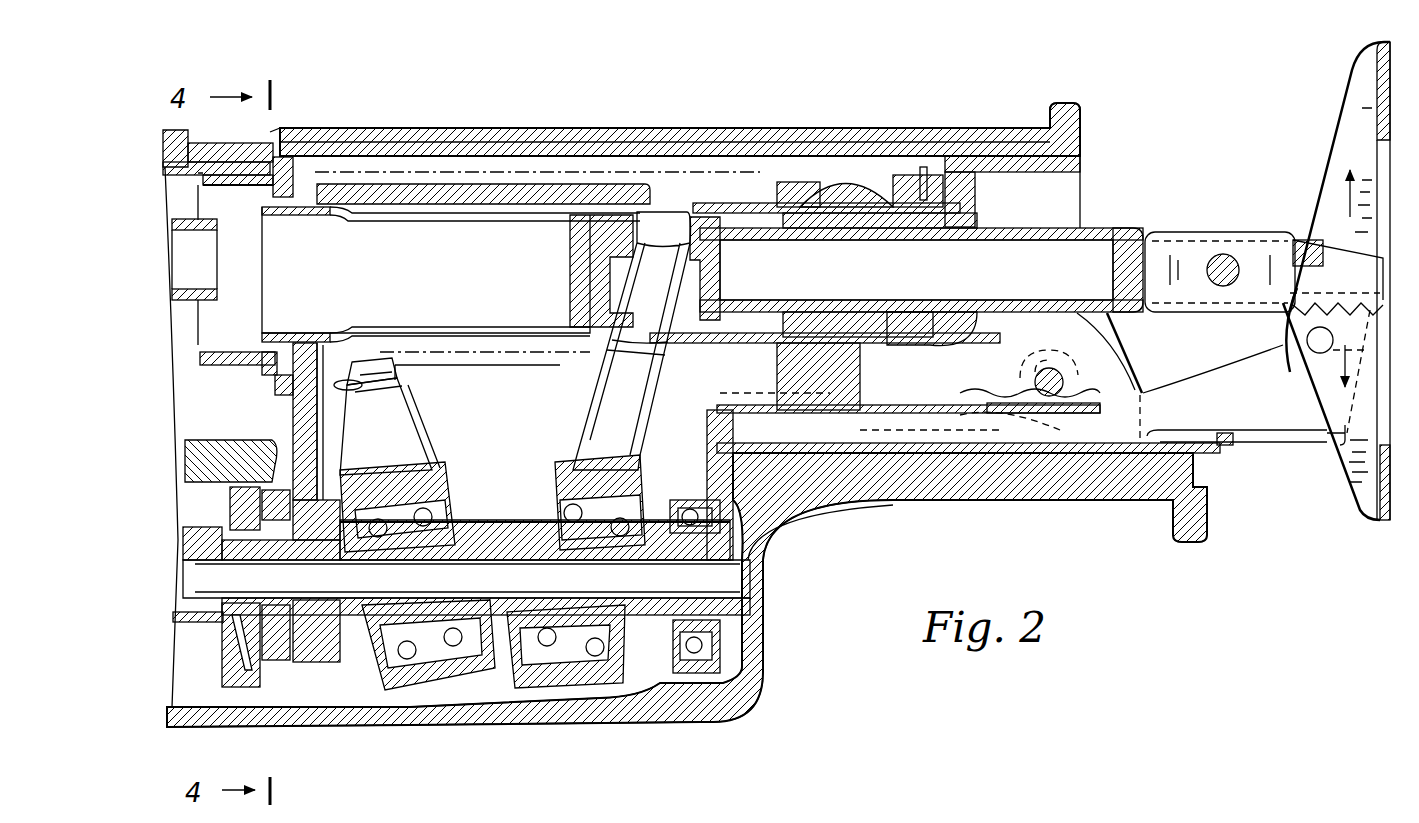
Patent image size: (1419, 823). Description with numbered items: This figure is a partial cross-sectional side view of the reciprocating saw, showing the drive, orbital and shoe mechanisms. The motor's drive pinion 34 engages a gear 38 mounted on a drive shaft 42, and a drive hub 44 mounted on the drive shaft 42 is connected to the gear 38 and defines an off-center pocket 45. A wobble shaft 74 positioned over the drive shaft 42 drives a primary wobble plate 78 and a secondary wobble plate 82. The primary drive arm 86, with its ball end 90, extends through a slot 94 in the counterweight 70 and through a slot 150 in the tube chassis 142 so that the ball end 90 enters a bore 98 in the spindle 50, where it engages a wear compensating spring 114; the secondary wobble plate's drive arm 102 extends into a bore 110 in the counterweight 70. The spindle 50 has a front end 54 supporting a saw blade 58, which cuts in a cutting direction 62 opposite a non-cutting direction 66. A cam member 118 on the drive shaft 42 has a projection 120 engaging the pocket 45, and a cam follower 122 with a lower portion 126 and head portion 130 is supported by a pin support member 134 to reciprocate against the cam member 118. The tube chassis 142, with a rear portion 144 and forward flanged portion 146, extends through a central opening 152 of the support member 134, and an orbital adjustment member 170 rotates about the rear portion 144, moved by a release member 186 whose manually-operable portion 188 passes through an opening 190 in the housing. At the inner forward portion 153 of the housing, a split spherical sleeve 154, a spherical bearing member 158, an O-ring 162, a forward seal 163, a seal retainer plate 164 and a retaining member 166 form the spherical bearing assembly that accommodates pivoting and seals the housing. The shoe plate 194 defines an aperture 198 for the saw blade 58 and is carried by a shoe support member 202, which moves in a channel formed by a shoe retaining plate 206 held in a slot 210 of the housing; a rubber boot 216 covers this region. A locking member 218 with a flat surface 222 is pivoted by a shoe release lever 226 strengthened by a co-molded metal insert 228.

The drive pinion 34 is at (193, 462).
The gear 38 is at (235, 522).
The drive shaft 42 is at (735, 583).
The drive hub 44 is at (223, 637).
The off-center pocket 45 is at (293, 680).
The spindle 50 is at (1120, 230).
The front end 54 is at (1180, 232).
The saw blade 58 is at (1283, 232).
The cutting direction 62 is at (1270, 365).
The non-cutting direction 66 is at (1350, 200).
The counterweight 70 is at (642, 190).
The wobble shaft 74 is at (492, 520).
The primary wobble plate 78 is at (573, 443).
The secondary wobble plate 82 is at (427, 438).
The primary drive arm 86 is at (628, 417).
The ball end 90 is at (575, 245).
The slot 94 is at (585, 370).
The bore 98 is at (580, 285).
The drive arm 102 is at (392, 441).
The bore 110 is at (368, 378).
The spring 114 is at (693, 215).
The cam member 118 is at (300, 672).
The projection 120 is at (325, 605).
The cam follower 122 is at (300, 420).
The lower portion 126 is at (284, 558).
The head portion 130 is at (275, 360).
The pin support member 134 is at (430, 462).
The tube chassis 142 is at (428, 259).
The rear portion 144 is at (293, 338).
The forward flanged portion 146 is at (860, 175).
The slot 150 is at (452, 330).
The central opening 152 is at (305, 195).
The inner, forward portion 153 is at (823, 160).
The split spherical sleeve 154 is at (805, 165).
The spherical bearing member 158 is at (910, 320).
The O-ring 162 is at (922, 170).
The forward seal 163 is at (965, 215).
The seal retainer plate 164 is at (960, 192).
The retaining member 166 is at (950, 180).
The orbital adjustment member 170 is at (275, 385).
The release member 186 is at (203, 179).
The manually-operable portion 188 is at (240, 143).
The opening 190 is at (270, 130).
The shoe plate 194 is at (1355, 77).
The aperture 198 is at (1377, 153).
The shoe support member 202 is at (1300, 417).
The shoe retaining plate 206 is at (1070, 475).
The slot 210 is at (715, 455).
The rubber boot 216 is at (1205, 527).
The locking member 218 is at (1065, 382).
The flat surface 222 is at (1045, 365).
The shoe release lever 226 is at (868, 500).
The metal insert 228 is at (900, 432).